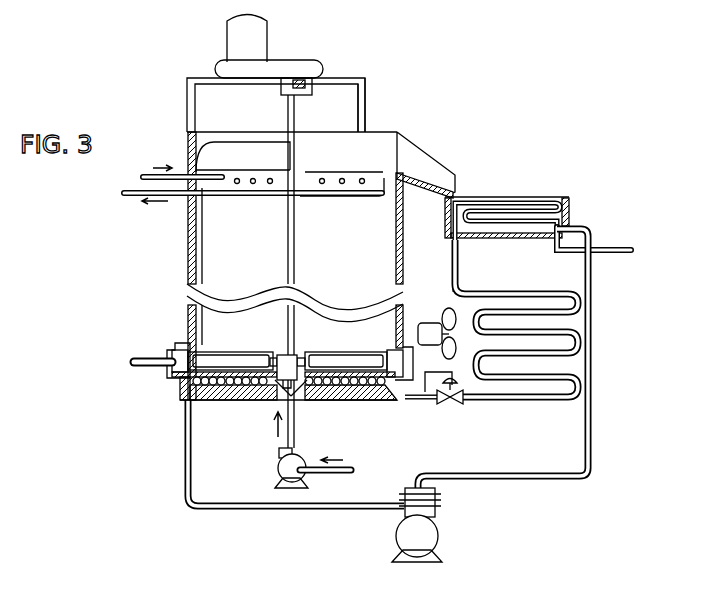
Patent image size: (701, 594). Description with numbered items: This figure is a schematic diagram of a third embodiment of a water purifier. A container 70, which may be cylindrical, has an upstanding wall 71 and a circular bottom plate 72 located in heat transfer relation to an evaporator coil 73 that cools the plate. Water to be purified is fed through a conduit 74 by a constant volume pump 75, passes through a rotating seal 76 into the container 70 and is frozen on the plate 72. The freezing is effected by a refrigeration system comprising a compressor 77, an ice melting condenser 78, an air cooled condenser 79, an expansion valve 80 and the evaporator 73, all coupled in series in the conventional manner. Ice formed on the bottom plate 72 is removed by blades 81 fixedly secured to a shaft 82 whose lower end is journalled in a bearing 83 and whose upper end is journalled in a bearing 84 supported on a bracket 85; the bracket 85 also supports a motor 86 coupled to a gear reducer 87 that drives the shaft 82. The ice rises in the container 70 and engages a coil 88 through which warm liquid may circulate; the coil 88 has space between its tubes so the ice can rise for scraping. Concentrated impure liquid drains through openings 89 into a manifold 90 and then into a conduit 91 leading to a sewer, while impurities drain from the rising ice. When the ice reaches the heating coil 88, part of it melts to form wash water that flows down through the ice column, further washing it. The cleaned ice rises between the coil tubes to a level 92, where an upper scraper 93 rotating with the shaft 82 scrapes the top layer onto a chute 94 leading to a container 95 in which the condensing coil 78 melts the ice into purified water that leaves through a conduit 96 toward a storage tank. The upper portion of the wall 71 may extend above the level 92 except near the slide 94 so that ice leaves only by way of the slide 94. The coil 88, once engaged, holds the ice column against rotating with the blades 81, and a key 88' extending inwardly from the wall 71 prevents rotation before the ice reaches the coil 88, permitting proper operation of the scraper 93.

The container 70 is at (188, 240).
The upstanding wall 71 is at (400, 286).
The circular bottom plate 72 is at (228, 400).
The evaporator coil 73 is at (370, 400).
The conduit 74 is at (295, 440).
The constant volume pump 75 is at (284, 465).
The rotating seal 76 is at (296, 400).
The compressor 77 is at (388, 395).
The ice melting condenser 78 is at (526, 204).
The air cooled condenser 79 is at (531, 294).
The expansion valve 80 is at (434, 366).
The blades 81 is at (240, 363).
The shaft 82 is at (293, 266).
The bearing 83 is at (275, 400).
The bearing 84 is at (310, 90).
The bracket 85 is at (360, 113).
The motor 86 is at (247, 39).
The gear reducer 87 is at (307, 53).
The coil 88 is at (253, 193).
The key 88' is at (221, 266).
The openings 89 is at (188, 364).
The manifold 90 is at (173, 343).
The conduit 91 is at (149, 367).
The level 92 is at (359, 170).
The upper scraper 93 is at (244, 156).
The chute 94 is at (437, 170).
The container 95 is at (568, 219).
The conduit 96 is at (604, 253).